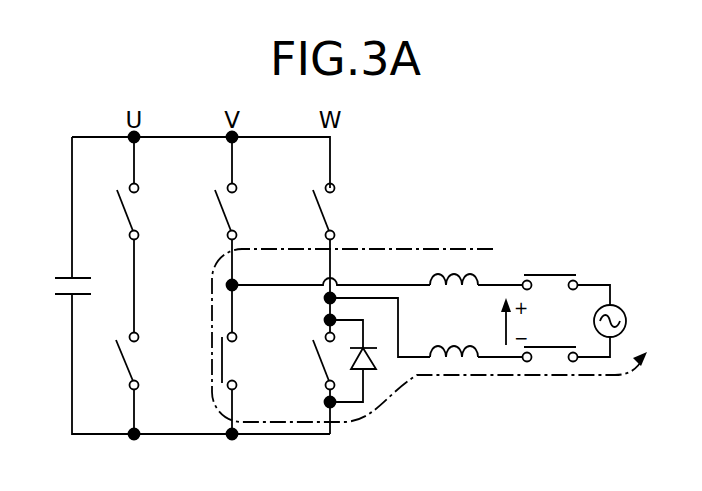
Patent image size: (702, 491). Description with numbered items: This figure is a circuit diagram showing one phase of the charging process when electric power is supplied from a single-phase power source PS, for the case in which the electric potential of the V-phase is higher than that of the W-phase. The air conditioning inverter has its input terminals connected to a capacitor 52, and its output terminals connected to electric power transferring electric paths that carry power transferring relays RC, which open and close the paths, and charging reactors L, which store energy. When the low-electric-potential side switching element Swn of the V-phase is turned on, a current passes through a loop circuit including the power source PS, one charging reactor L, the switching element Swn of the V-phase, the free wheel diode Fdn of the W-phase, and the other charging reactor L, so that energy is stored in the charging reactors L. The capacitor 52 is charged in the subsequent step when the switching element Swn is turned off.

The capacitor 52 is at (68, 277).
The low-electric-potential side switching element Swn is at (221, 349).
The free wheel diode Fdn is at (377, 362).
The charging reactor L is at (451, 277).
The power transferring relay RC is at (558, 238).
The power source PS is at (627, 321).